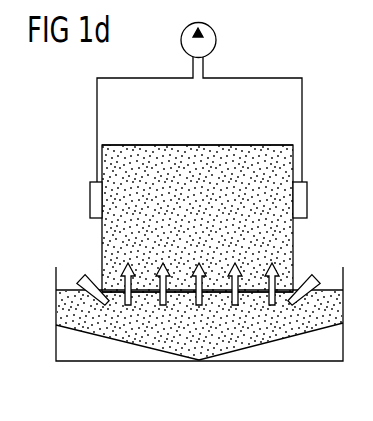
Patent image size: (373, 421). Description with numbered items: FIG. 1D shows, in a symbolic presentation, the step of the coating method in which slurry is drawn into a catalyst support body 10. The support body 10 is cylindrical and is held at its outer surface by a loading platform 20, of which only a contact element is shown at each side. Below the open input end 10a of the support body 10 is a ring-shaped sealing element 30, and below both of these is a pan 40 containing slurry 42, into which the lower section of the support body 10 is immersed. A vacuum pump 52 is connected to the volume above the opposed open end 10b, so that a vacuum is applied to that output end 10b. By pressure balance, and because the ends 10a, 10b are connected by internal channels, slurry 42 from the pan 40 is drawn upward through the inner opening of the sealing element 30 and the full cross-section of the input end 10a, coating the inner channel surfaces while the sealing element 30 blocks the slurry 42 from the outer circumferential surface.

The catalyst support body 10 is at (197, 143).
The open input end 10a is at (143, 293).
The open end 10b is at (250, 142).
The loading platform 20 is at (90, 197).
The sealing element 30 is at (86, 273).
The pan 40 is at (56, 306).
The slurry 42 is at (238, 343).
The vacuum pump 52 is at (216, 40).